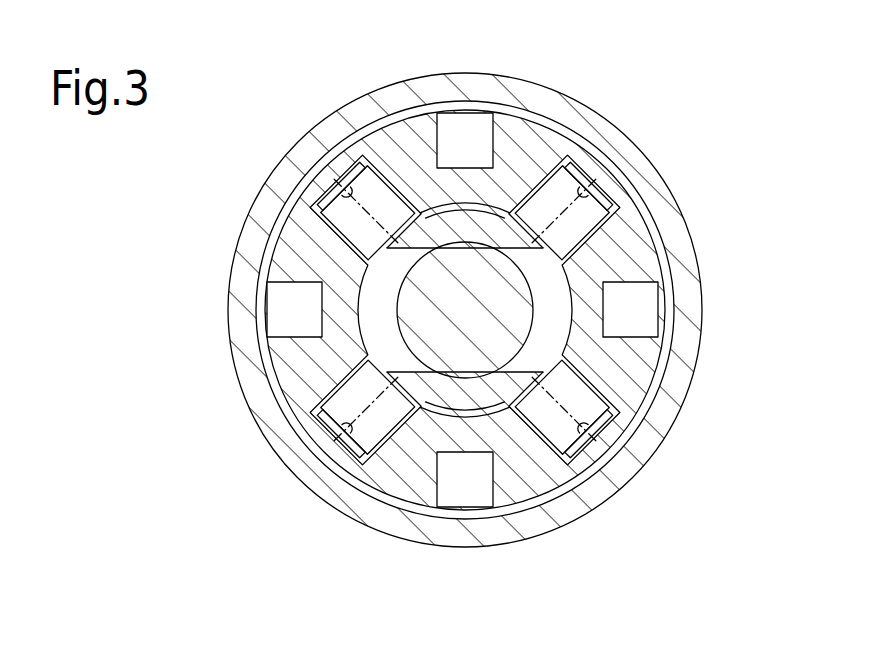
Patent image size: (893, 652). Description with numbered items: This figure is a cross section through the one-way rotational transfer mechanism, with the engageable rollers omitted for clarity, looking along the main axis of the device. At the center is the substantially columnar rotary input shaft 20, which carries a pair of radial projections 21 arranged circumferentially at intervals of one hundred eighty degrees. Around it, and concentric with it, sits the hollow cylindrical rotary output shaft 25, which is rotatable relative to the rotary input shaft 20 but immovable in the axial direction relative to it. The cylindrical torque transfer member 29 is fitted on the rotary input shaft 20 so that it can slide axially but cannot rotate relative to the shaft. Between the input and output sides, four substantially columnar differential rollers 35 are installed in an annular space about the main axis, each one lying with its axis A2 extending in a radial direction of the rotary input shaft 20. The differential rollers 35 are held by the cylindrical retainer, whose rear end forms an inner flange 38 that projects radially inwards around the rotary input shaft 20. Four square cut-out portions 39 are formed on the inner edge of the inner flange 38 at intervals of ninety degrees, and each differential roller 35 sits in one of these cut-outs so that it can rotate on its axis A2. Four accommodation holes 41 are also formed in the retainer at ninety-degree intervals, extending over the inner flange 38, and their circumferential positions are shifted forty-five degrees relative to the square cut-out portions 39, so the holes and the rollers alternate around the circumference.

The rotary input shaft 20 is at (430, 330).
The radial projections 21 is at (660, 381).
The cylindrical rotary output shaft 25 is at (515, 95).
The torque transfer member 29 is at (553, 165).
The differential rollers 35 is at (558, 183).
The inner flange 38 is at (645, 255).
The square cut-out portions 39 is at (590, 192).
The accommodation holes 41 is at (467, 128).
The axes of the differential rollers A2 is at (640, 201).